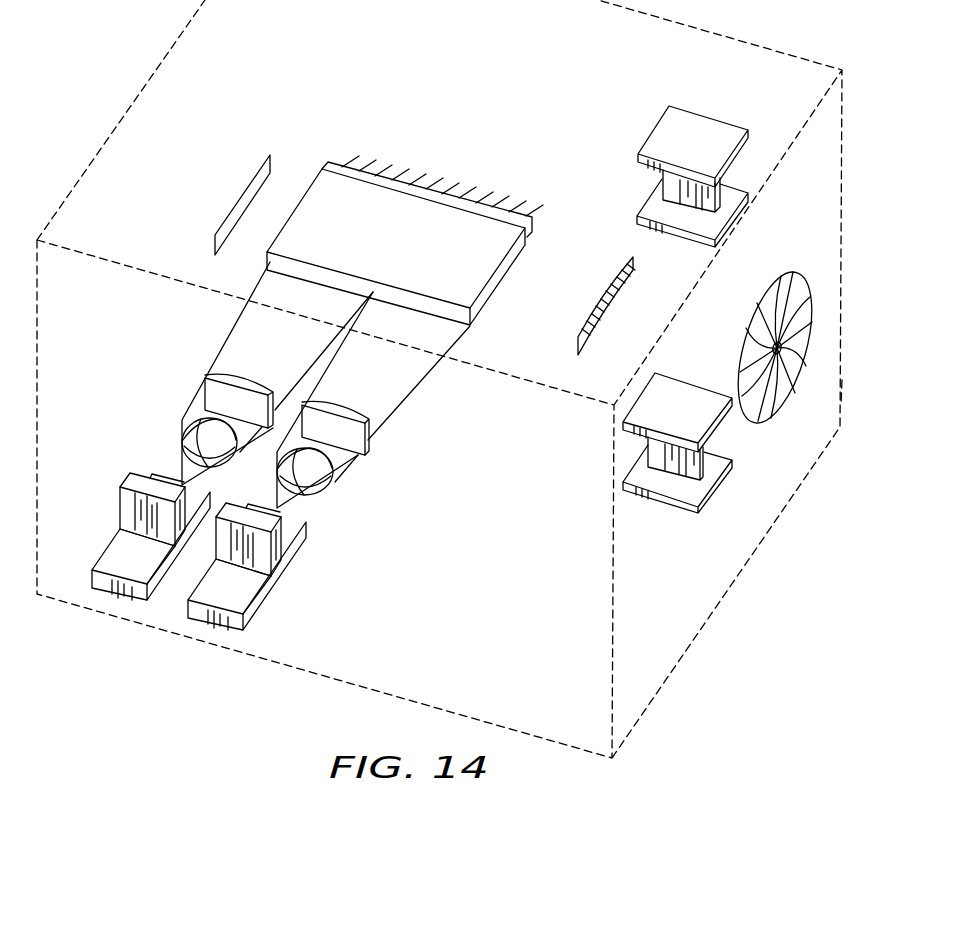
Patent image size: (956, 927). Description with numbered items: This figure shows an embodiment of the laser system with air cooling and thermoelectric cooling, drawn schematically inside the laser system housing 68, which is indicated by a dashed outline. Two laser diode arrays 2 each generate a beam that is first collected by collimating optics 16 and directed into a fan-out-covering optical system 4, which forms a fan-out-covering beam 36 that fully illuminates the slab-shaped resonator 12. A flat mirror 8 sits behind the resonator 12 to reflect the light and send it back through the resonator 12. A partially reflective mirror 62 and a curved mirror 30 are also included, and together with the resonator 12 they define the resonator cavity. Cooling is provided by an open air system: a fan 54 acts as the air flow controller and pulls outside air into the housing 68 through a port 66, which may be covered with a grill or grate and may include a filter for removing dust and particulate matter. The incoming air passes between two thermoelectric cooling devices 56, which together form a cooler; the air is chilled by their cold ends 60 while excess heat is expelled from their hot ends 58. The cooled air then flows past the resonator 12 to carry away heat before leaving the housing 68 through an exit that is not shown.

The laser diode array 2 is at (112, 553).
The fan-out-covering optical system 4 is at (205, 388).
The flat mirror 8 is at (537, 223).
The resonator 12 is at (488, 268).
The collimating optics 16 is at (184, 434).
The curved mirror 30 is at (588, 355).
The fan-out-covering beam 36 is at (237, 352).
The fan 54 is at (797, 352).
The thermoelectric cooling device 56 is at (711, 333).
The hot end 58 is at (663, 135).
The cold end 60 is at (713, 225).
The partially reflective mirror 62 is at (278, 155).
The port 66 is at (807, 346).
The housing 68 is at (843, 392).